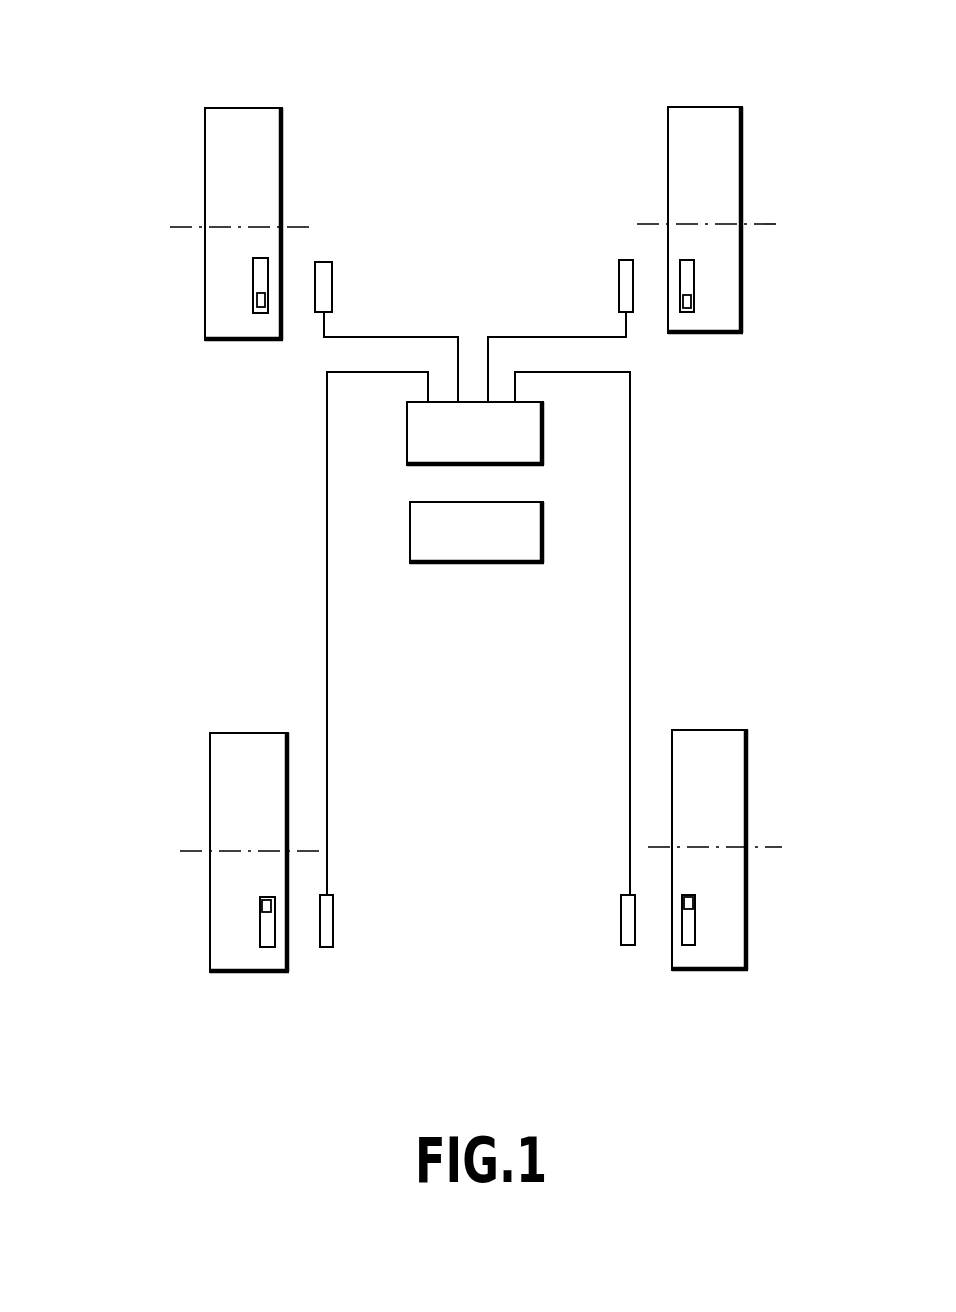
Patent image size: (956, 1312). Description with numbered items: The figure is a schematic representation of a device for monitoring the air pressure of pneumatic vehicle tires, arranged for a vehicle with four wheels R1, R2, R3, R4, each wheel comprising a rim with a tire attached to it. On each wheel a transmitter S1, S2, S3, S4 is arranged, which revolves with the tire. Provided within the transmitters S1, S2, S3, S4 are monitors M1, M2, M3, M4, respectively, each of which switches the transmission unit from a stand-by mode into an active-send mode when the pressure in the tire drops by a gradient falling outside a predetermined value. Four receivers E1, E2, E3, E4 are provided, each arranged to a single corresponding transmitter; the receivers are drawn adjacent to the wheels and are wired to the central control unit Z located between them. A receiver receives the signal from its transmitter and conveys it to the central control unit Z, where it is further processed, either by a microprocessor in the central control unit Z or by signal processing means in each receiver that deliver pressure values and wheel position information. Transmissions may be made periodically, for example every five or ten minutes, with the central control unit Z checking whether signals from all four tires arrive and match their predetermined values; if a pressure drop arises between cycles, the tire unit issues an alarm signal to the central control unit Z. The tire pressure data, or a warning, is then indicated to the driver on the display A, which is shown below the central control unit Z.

The wheel R1 is at (250, 108).
The wheel R2 is at (713, 107).
The wheel R3 is at (712, 970).
The wheel R4 is at (250, 972).
The transmitter S1 is at (253, 284).
The transmitter S2 is at (694, 288).
The transmitter S3 is at (695, 920).
The transmitter S4 is at (260, 920).
The monitor M1 is at (257, 310).
The monitor M2 is at (688, 312).
The monitor M3 is at (686, 902).
The monitor M4 is at (262, 903).
The receiver E1 is at (332, 284).
The receiver E2 is at (619, 284).
The receiver E3 is at (621, 920).
The receiver E4 is at (333, 920).
The central control unit Z is at (543, 430).
The display A is at (543, 535).